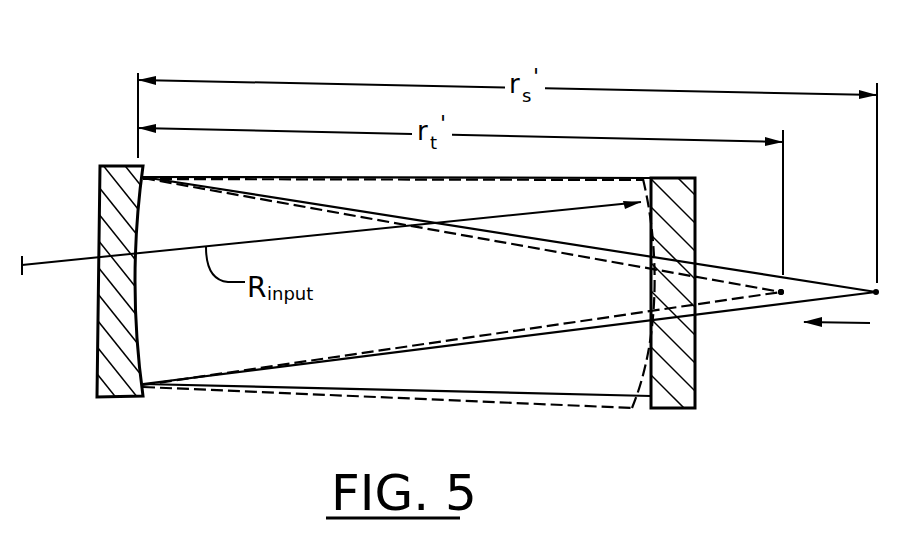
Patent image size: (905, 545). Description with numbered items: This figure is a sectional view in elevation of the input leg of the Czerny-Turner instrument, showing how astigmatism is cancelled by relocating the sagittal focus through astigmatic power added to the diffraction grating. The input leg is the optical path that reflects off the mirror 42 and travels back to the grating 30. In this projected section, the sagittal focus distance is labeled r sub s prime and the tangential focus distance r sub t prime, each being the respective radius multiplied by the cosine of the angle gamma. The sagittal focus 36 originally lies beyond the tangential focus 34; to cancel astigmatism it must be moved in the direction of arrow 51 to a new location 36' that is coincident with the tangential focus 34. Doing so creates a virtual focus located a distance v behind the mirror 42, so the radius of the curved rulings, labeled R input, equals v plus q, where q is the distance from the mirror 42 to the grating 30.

The grating 30 is at (697, 214).
The tangential focus 34 is at (781, 296).
The sagittal focus 36 is at (868, 334).
The new location of sagittal focus 36' is at (826, 265).
The mirror 42 is at (99, 188).
The arrow 51 is at (838, 326).